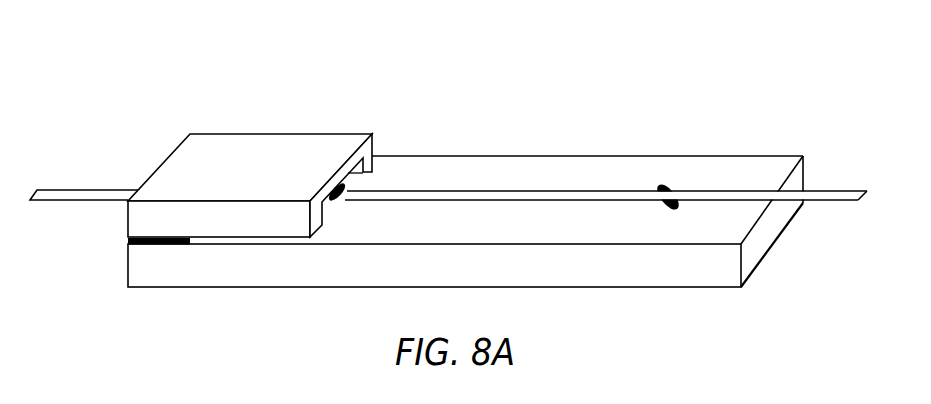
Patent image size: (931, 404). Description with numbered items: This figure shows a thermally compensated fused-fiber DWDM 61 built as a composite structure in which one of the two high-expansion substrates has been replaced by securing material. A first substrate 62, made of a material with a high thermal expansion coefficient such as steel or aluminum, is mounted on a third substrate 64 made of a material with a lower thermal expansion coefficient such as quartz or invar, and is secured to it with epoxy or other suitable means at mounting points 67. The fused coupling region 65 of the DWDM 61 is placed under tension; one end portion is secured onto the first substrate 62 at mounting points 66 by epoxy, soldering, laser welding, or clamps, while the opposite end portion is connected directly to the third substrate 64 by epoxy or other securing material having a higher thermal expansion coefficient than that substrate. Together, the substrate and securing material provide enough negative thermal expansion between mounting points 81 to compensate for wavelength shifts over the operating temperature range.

The fused-fiber DWDM 61 is at (88, 178).
The first substrate 62 is at (268, 142).
The third substrate 64 is at (281, 270).
The fused coupling region 65 is at (540, 197).
The mounting points 66 is at (340, 199).
The mounting points 67 is at (128, 241).
The mounting points 81 is at (675, 186).